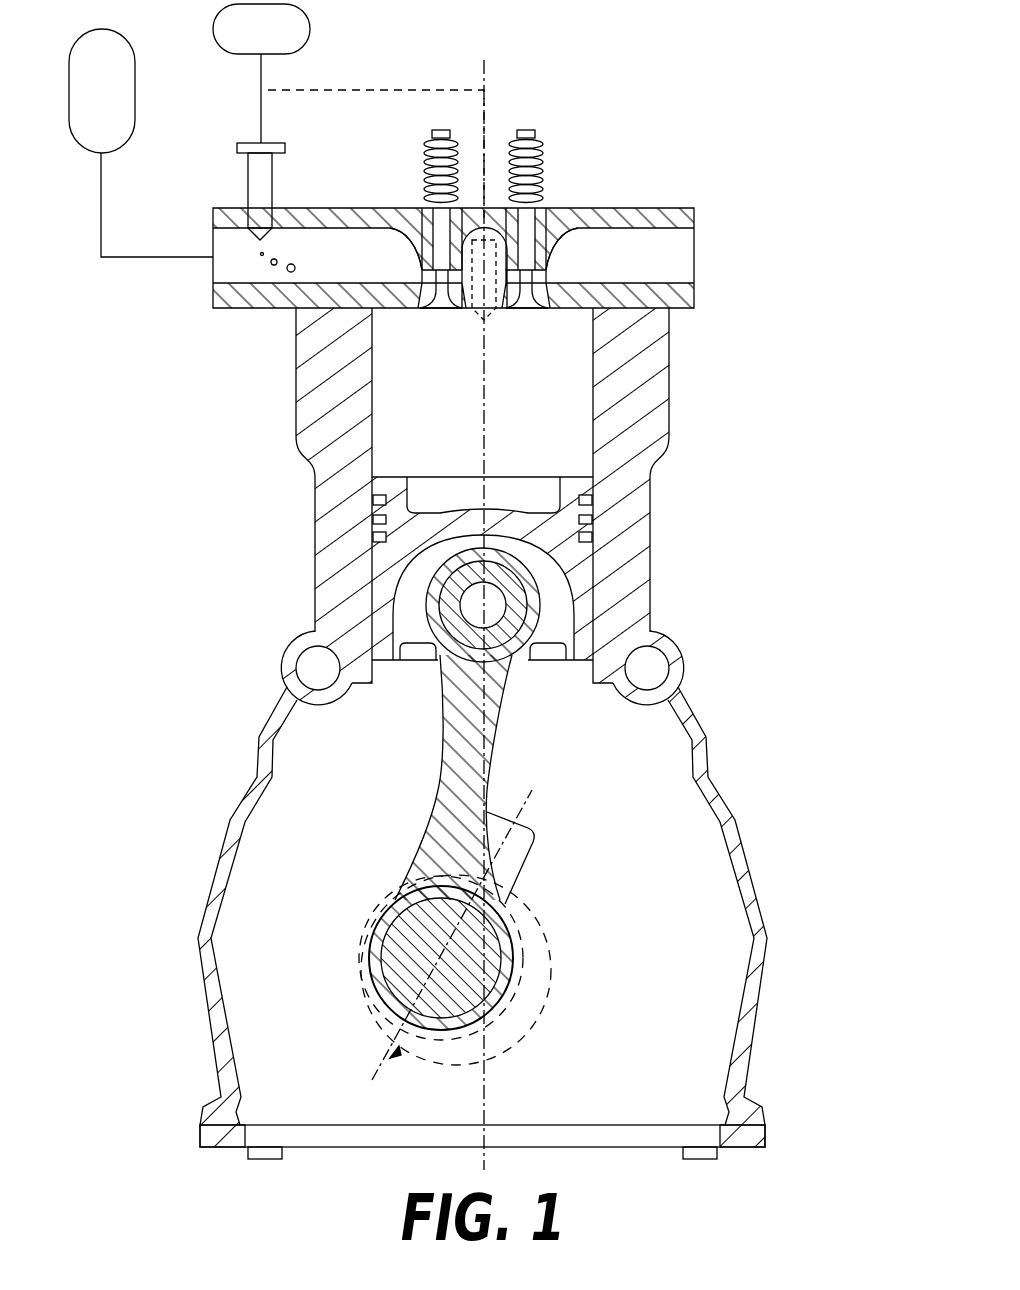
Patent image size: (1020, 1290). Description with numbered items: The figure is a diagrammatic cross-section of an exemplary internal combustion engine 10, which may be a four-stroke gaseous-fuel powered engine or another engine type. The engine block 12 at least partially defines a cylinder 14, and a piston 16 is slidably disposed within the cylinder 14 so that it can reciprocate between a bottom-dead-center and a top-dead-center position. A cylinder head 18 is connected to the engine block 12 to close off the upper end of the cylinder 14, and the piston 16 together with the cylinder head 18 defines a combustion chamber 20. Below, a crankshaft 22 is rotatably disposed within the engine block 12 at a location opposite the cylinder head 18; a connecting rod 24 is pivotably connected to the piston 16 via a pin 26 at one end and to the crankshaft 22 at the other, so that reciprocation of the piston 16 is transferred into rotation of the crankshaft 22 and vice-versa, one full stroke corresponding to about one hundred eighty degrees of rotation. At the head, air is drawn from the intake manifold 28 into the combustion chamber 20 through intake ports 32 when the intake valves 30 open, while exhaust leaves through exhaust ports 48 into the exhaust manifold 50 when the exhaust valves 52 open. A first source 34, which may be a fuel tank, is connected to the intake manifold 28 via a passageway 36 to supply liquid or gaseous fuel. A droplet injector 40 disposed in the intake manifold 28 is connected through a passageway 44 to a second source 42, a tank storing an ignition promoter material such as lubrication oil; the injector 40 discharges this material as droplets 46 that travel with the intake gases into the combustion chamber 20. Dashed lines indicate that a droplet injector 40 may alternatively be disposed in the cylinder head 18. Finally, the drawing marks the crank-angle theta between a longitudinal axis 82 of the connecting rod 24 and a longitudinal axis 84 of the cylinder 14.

The internal combustion engine 10 is at (755, 223).
The engine block 12 is at (682, 677).
The cylinder 14 is at (639, 583).
The piston 16 is at (583, 520).
The cylinder head 18 is at (690, 300).
The combustion chamber 20 is at (526, 386).
The crankshaft 22 is at (497, 856).
The connecting rod 24 is at (451, 797).
The pin 26 is at (472, 618).
The intake manifold 28 is at (325, 245).
The intake valves 30 is at (430, 266).
The intake ports 32 is at (428, 296).
The first source 34 is at (90, 106).
The passageway 36 is at (100, 226).
The droplet injector 40 is at (255, 185).
The second source 42 is at (250, 44).
The passageway 44 is at (260, 118).
The droplets 46 is at (273, 264).
The exhaust ports 48 is at (538, 282).
The exhaust manifold 50 is at (640, 242).
The exhaust valves 52 is at (522, 272).
The longitudinal axis 82 is at (373, 1070).
The longitudinal axis 84 is at (487, 1110).